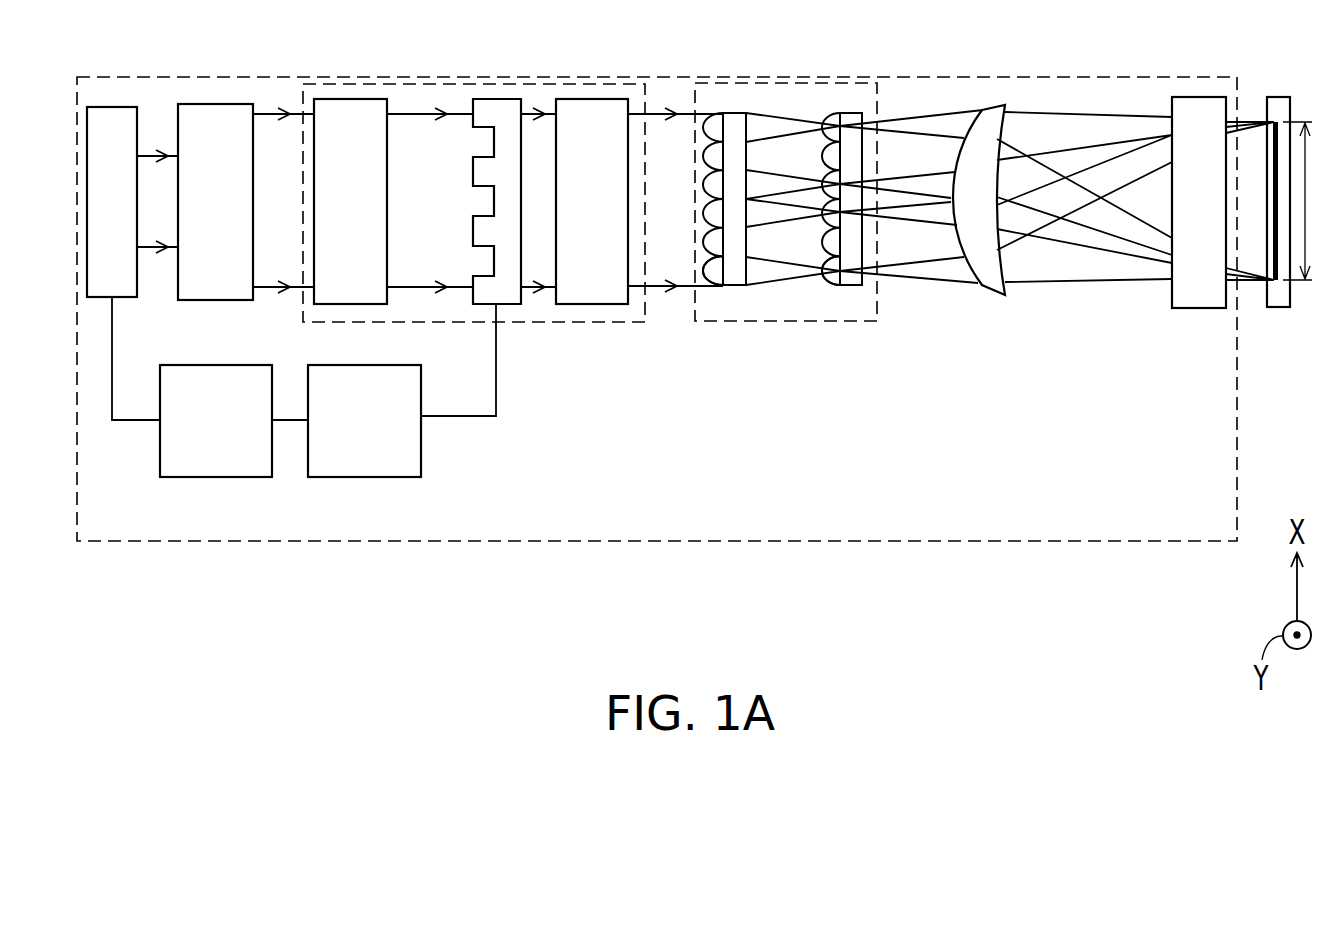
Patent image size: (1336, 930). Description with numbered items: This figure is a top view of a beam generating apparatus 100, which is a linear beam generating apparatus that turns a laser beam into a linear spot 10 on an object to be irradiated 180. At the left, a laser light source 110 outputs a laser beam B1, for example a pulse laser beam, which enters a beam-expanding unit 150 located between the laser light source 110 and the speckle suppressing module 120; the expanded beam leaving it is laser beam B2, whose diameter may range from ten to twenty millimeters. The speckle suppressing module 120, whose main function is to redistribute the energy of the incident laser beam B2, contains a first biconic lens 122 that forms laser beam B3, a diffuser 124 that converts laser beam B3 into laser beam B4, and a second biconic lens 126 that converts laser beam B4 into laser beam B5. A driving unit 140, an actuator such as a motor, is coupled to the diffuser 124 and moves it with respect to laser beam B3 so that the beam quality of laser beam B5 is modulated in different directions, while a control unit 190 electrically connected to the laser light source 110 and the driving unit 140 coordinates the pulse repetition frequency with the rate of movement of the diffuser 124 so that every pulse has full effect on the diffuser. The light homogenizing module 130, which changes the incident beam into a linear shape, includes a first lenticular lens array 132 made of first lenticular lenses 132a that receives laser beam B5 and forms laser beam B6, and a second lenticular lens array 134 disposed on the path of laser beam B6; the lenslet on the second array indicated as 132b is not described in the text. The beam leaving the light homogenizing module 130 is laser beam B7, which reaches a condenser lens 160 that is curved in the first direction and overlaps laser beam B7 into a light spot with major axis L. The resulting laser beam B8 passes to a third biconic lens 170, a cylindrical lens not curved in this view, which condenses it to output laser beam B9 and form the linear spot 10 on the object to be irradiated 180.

The beam generating apparatus 100 is at (330, 541).
The laser light source 110 is at (105, 128).
The beam-expanding unit 150 is at (204, 130).
The speckle suppressing module 120 is at (595, 322).
The first biconic lens 122 is at (345, 120).
The diffuser 124 is at (496, 113).
The second biconic lens 126 is at (606, 122).
The light homogenizing module 130 is at (787, 321).
The first lenticular lens array 132 is at (733, 122).
The first lenticular lens 132a is at (726, 290).
The lens unit of second lens array 132b is at (841, 290).
The second lenticular lens array 134 is at (849, 118).
The condenser lens 160 is at (985, 125).
The third biconic lens 170 is at (1192, 110).
The object to be irradiated 180 is at (1276, 283).
The linear spot 10 is at (1283, 307).
The control unit 190 is at (215, 477).
The driving unit 140 is at (363, 477).
The laser beam B1 is at (148, 148).
The laser beam B2 is at (265, 110).
The laser beam B3 is at (406, 110).
The laser beam B4 is at (528, 110).
The laser beam B5 is at (657, 110).
The laser beam B6 is at (793, 117).
The laser beam B7 is at (936, 117).
The laser beam B8 is at (1090, 115).
The laser beam B9 is at (1248, 125).
The major axis L is at (1306, 201).